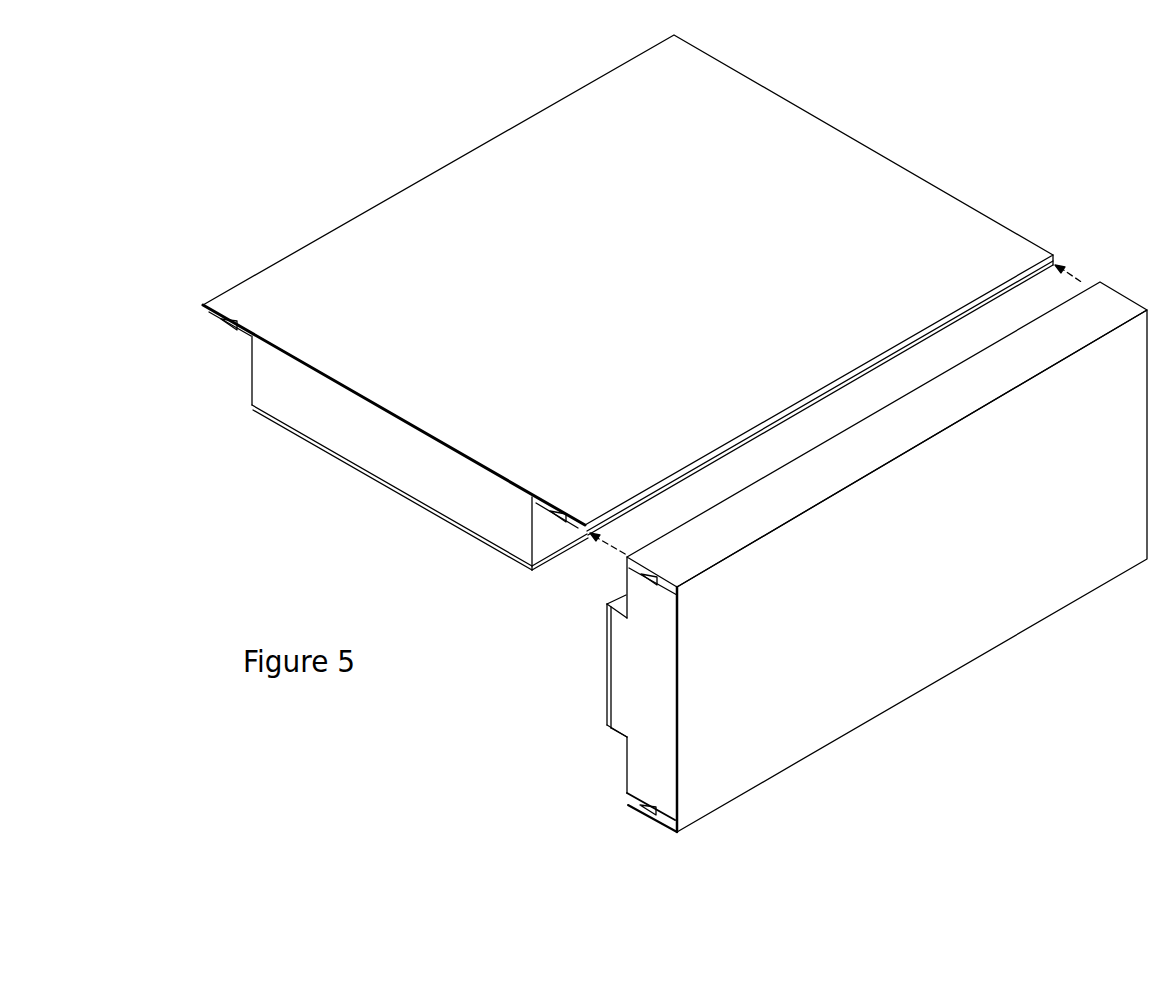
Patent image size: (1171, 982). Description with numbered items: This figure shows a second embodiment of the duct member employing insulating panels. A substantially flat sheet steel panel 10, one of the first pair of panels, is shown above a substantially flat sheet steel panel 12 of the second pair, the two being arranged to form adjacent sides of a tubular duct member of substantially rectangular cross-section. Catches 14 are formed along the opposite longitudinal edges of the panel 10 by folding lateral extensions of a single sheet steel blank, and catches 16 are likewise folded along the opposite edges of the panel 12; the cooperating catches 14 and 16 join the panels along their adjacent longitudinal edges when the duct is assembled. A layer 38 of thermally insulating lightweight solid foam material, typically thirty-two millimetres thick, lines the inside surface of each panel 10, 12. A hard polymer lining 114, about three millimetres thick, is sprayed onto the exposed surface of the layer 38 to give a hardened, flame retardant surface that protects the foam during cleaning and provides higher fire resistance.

The sheet steel panel 10 is at (368, 265).
The sheet steel panel 12 is at (933, 627).
The catch 14 is at (228, 335).
The catch 16 is at (657, 568).
The thermally insulating layer 38 is at (395, 457).
The hard polymer lining 114 is at (482, 540).